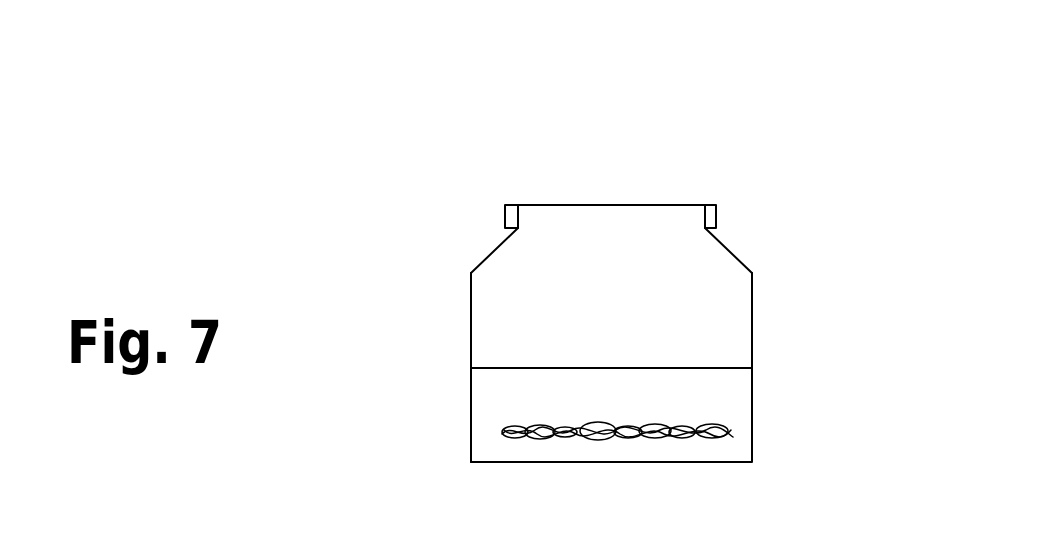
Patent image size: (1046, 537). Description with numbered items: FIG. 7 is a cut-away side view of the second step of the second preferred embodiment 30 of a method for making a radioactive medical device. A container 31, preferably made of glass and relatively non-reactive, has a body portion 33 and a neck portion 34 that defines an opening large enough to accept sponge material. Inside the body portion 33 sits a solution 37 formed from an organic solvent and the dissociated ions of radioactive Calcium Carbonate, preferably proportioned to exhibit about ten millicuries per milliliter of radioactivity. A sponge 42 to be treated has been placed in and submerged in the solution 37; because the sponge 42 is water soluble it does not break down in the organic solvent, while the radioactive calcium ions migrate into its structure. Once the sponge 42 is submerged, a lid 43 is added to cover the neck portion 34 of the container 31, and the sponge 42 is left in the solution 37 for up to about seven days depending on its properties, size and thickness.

The second preferred embodiment 30 is at (494, 164).
The container 31 is at (762, 338).
The body portion 33 is at (470, 392).
The neck portion 34 is at (505, 227).
The solution 37 is at (722, 383).
The sponge 42 is at (733, 438).
The lid 43 is at (673, 198).